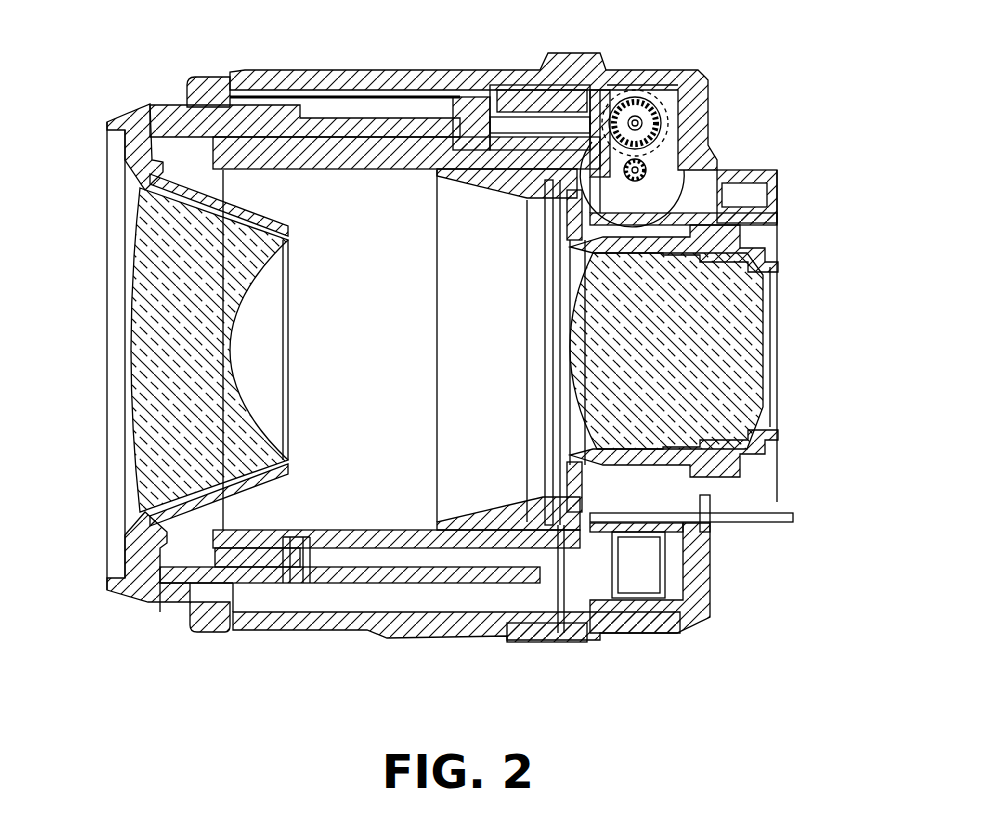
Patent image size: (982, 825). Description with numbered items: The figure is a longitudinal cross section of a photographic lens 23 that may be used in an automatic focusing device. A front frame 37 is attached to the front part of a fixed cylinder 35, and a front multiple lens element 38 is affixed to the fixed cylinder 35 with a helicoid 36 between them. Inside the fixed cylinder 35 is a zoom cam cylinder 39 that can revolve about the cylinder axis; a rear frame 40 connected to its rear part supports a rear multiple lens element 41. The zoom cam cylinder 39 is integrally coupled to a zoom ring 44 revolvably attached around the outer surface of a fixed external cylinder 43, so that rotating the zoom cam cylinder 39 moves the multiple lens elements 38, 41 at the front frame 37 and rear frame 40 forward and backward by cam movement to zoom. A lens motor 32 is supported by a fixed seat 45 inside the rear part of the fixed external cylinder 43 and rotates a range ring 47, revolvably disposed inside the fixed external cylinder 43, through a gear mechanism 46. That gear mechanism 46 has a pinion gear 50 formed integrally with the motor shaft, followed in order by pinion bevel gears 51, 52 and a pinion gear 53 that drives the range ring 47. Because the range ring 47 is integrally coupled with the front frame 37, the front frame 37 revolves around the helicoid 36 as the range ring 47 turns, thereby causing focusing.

The photographic lens 23 is at (787, 372).
The lens motor 32 is at (667, 148).
The fixed cylinder 35 is at (360, 143).
The helicoid 36 is at (180, 118).
The front frame 37 is at (137, 149).
The multiple lens element 38 is at (147, 345).
The zoom cam cylinder 39 is at (240, 540).
The rear frame 40 is at (743, 260).
The multiple lens element 41 is at (747, 327).
The fixed external cylinder 43 is at (305, 633).
The zoom ring 44 is at (555, 650).
The fixed seat 45 is at (655, 633).
The gear mechanism 46 is at (668, 98).
The range ring 47 is at (210, 632).
The pinion gear 50 is at (647, 170).
The pinion bevel gear 51 is at (638, 83).
The pinion bevel gear 52 is at (607, 85).
The pinion gear 53 is at (477, 82).